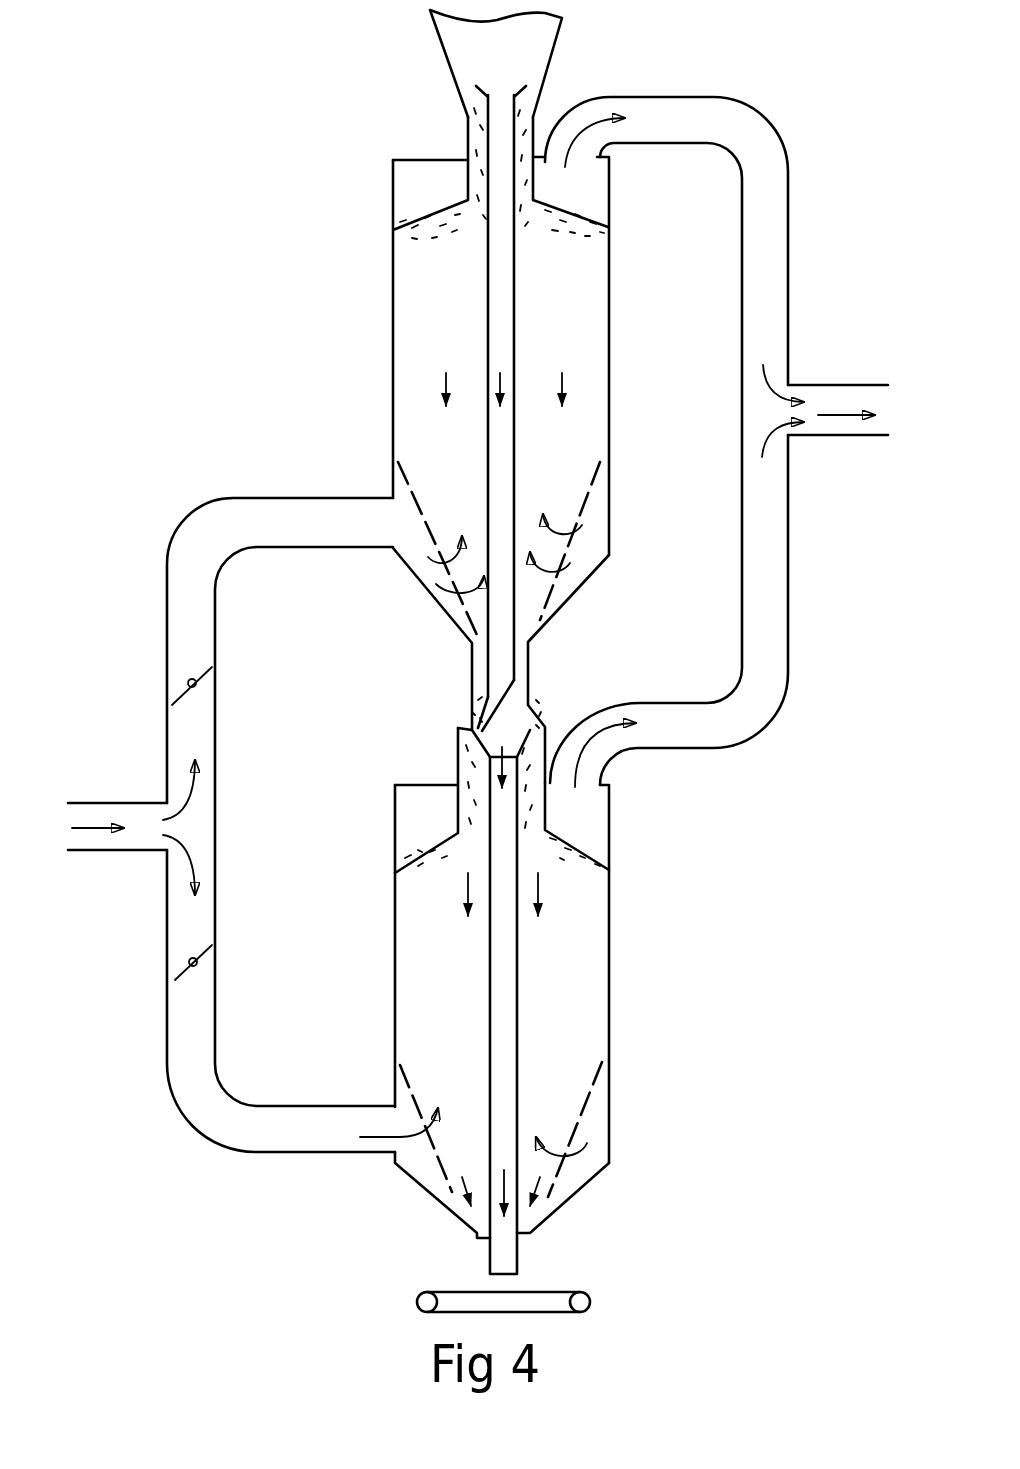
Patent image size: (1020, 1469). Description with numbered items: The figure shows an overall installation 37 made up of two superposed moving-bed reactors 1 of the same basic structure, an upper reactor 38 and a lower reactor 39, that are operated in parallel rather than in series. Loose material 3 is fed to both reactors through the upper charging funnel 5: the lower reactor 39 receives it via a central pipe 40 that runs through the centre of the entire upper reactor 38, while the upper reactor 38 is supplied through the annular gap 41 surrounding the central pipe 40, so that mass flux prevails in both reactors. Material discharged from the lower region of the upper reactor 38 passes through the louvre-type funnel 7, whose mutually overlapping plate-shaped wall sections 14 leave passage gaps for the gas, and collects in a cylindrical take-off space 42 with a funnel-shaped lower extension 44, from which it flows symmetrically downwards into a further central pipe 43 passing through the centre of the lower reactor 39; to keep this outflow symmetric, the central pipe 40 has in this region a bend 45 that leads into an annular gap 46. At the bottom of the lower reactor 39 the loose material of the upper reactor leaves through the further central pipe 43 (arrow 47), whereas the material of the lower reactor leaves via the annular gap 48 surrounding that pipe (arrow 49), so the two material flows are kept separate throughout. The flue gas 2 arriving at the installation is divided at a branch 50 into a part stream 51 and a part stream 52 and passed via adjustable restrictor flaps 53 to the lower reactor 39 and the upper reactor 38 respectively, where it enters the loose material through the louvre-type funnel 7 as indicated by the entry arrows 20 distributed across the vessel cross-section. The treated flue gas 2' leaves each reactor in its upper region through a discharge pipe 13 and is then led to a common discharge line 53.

The moving-bed reactor 1 is at (622, 440).
The flue gas 2 is at (117, 865).
The treated flue gas 2' is at (739, 412).
The loose material 3 is at (536, 72).
The charging funnel 5 is at (470, 65).
The louvre-type funnel 7 is at (582, 552).
The discharge pipe 13 is at (612, 148).
The wall sections 14 is at (560, 588).
The entry arrows 20 is at (446, 550).
The overall installation 37 is at (258, 419).
The upper reactor 38 is at (620, 302).
The lower reactor 39 is at (622, 905).
The central pipe 40 is at (516, 357).
The annular gap 41 is at (477, 173).
The cylindrical take-off space 42 is at (520, 667).
The further central pipe 43 is at (502, 992).
The funnel-shaped lower extension 44 is at (512, 745).
The bend 45 is at (476, 706).
The annular gap 46 is at (477, 770).
The arrow 47 is at (500, 1225).
The annular gap 48 is at (522, 1233).
The arrow 49 is at (465, 1196).
The branch 50 is at (195, 832).
The part stream 51 is at (197, 883).
The part stream 52 is at (197, 778).
The adjustable restrictor flaps 53 is at (205, 680).